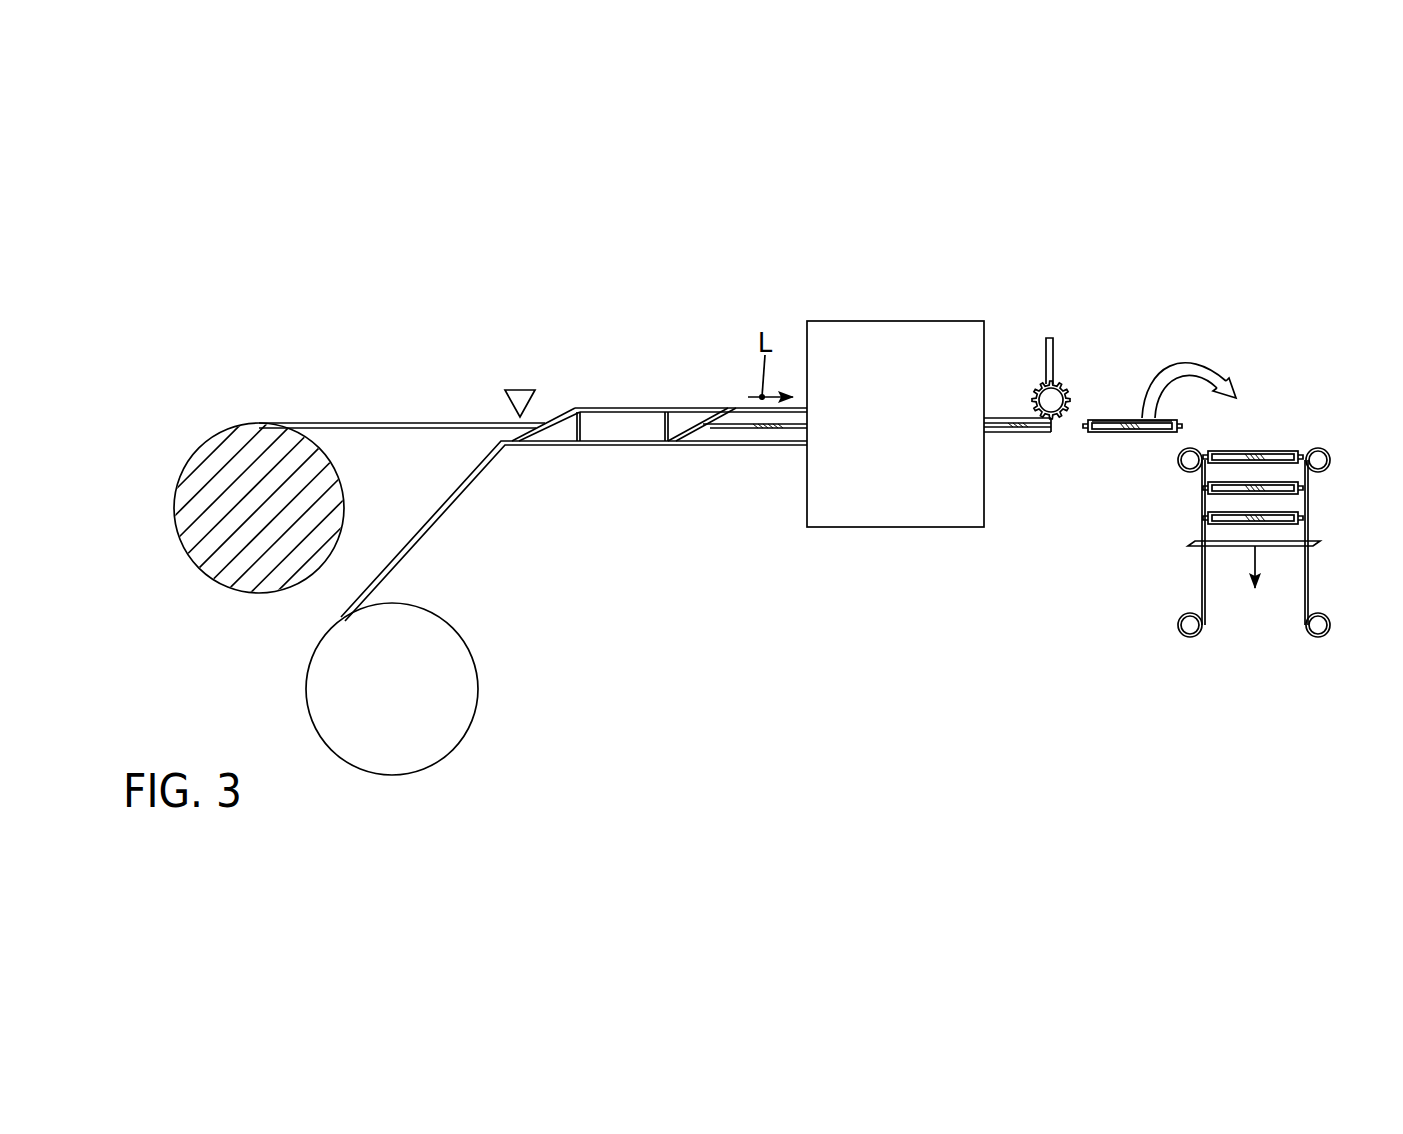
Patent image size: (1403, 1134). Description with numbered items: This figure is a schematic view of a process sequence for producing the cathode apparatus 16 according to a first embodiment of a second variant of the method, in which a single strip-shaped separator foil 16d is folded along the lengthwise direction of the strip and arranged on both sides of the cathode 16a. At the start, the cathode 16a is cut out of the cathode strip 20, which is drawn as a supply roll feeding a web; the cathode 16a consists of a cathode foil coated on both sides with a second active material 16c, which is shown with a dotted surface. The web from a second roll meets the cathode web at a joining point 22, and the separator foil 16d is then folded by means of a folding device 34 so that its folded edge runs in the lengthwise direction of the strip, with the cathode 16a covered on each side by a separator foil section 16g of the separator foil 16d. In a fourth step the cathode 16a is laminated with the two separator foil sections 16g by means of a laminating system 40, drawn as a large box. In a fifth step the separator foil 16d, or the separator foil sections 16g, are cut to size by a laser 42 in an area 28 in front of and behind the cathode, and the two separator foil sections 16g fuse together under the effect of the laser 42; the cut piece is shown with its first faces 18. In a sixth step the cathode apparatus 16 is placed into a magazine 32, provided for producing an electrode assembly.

The cathode strip 20 is at (358, 426).
The joining point 22 is at (522, 391).
The folding device 34 is at (617, 418).
The laminating system 40 is at (887, 357).
The cathode apparatus 16 is at (1262, 445).
The cathode 16a is at (737, 426).
The second active material 16c is at (1112, 419).
The separator foil 16d is at (470, 482).
The separator foil section 16g is at (1016, 417).
The laser 42 is at (1051, 352).
The area 28 is at (1052, 437).
The first faces 18 is at (1144, 432).
The magazine 32 is at (1308, 503).